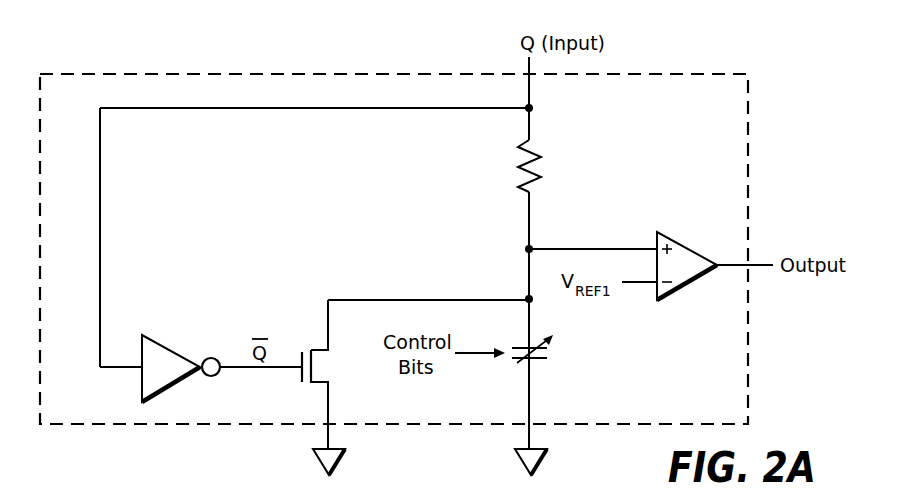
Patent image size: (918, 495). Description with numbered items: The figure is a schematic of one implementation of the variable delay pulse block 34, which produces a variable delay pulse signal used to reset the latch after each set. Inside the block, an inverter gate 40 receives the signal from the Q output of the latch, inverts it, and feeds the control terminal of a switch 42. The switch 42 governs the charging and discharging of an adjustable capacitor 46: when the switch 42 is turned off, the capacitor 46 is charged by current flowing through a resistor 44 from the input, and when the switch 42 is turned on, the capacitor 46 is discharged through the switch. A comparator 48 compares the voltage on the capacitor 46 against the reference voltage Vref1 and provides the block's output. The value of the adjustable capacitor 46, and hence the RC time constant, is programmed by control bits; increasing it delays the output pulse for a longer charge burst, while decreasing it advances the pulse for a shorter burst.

The variable delay pulse block 34 is at (749, 135).
The inverter gate 40 is at (173, 351).
The switch 42 is at (326, 385).
The resistor 44 is at (534, 147).
The adjustable capacitor 46 is at (526, 362).
The comparator 48 is at (670, 233).